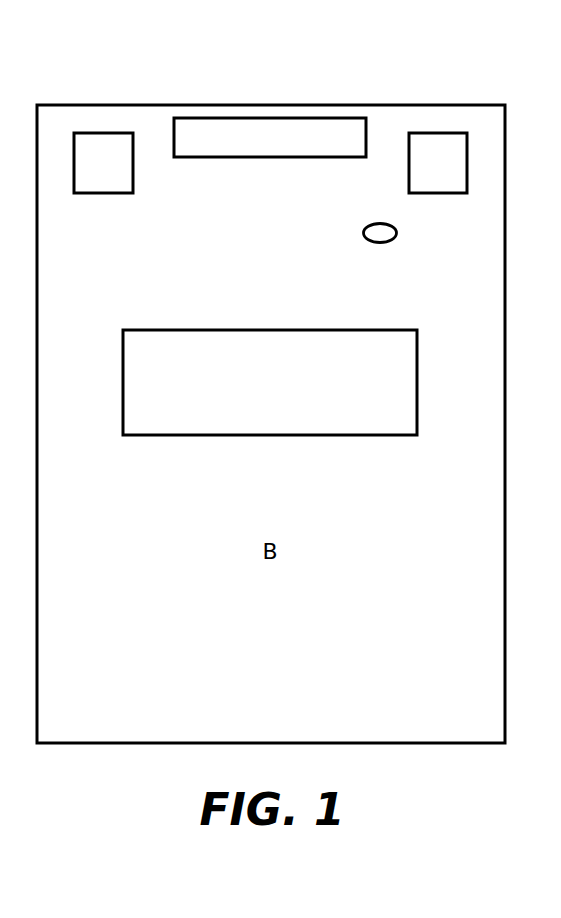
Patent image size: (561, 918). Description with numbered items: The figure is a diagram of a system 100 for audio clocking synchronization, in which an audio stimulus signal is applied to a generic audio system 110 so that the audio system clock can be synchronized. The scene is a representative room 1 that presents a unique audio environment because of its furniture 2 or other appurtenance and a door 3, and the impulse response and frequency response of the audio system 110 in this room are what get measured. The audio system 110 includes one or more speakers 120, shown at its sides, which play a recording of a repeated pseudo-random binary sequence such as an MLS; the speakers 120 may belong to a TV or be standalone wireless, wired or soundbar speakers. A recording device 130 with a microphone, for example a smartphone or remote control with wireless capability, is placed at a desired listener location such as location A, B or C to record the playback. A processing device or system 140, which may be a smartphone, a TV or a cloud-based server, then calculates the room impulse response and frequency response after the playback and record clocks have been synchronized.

The system/method/algorithm for audio clocking synchronization 100 is at (154, 68).
The generic audio system 110 is at (288, 150).
The speaker 120 is at (85, 174).
The recording device 130 is at (390, 243).
The processing device or system 140 is at (373, 241).
The room 1 is at (122, 562).
The furniture 2 is at (264, 414).
The door 3 is at (384, 728).